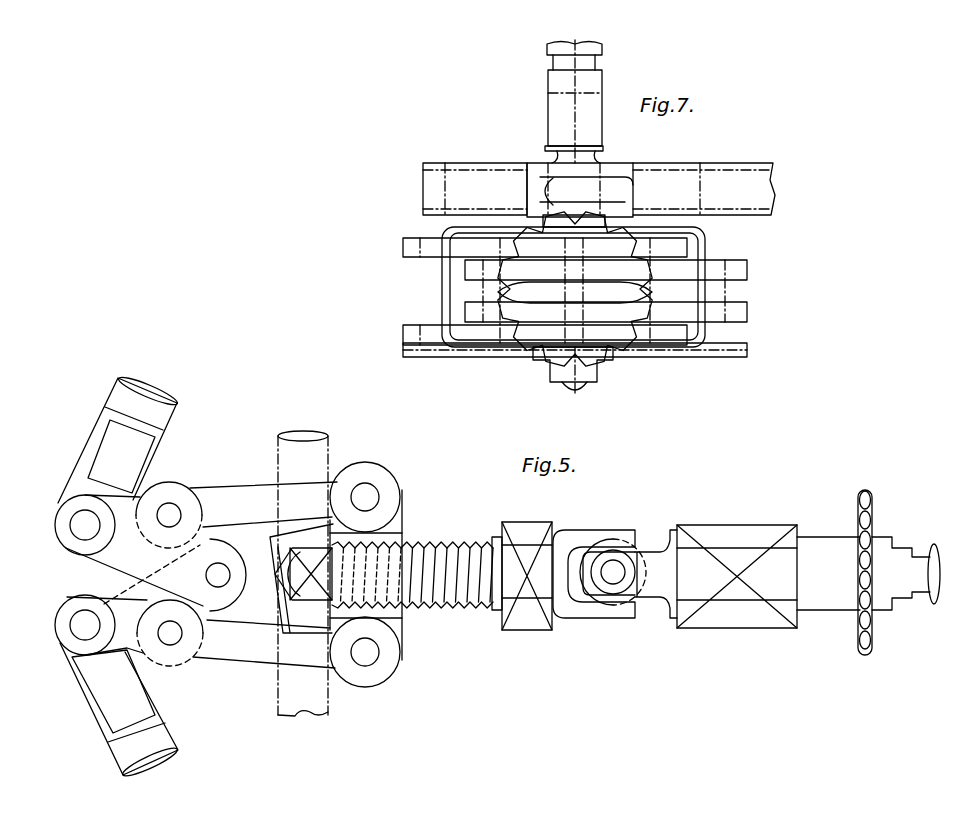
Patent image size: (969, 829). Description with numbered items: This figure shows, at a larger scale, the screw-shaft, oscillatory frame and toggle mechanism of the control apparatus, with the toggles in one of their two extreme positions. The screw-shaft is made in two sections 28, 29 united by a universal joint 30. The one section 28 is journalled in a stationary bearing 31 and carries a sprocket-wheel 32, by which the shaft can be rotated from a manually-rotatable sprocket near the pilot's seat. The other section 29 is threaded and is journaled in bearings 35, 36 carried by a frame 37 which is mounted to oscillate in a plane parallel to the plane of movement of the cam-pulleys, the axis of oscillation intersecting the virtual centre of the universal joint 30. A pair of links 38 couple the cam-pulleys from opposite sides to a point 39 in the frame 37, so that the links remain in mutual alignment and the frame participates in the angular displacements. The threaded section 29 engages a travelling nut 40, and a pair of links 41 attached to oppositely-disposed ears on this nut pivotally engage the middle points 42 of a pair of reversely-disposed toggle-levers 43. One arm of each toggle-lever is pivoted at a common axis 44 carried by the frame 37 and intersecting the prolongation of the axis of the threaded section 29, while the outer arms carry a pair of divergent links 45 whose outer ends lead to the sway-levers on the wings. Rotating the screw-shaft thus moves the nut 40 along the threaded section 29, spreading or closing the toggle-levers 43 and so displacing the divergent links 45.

In FIG. 5, the screw-shaft section 28 is at (738, 600).
In FIG. 5, the threaded screw-shaft section 29 is at (433, 592).
In FIG. 5, the universal joint 30 is at (615, 570).
In FIG. 5, the stationary bearing 31 is at (720, 537).
In FIG. 7, the sprocket-wheel 32 is at (593, 365).
In FIG. 5, the sprocket-wheel 32 is at (868, 508).
In FIG. 5, the bearing 35 is at (537, 532).
In FIG. 5, the bearing 36 is at (308, 546).
In FIG. 7, the oscillatory frame 37 is at (448, 288).
In FIG. 7, the link 38 is at (708, 168).
In FIG. 5, the link 38 is at (330, 710).
In FIG. 7, the point in the frame 39 is at (572, 147).
In FIG. 5, the point in the frame 39 is at (282, 625).
In FIG. 5, the travelling nut 40 is at (402, 526).
In FIG. 5, the link 41 is at (247, 648).
In FIG. 5, the middle point of toggle-lever 42 is at (170, 633).
In FIG. 7, the toggle-lever 43 is at (747, 270).
In FIG. 5, the toggle-lever 43 is at (97, 598).
In FIG. 5, the common axis 44 is at (213, 573).
In FIG. 5, the divergent link 45 is at (127, 757).